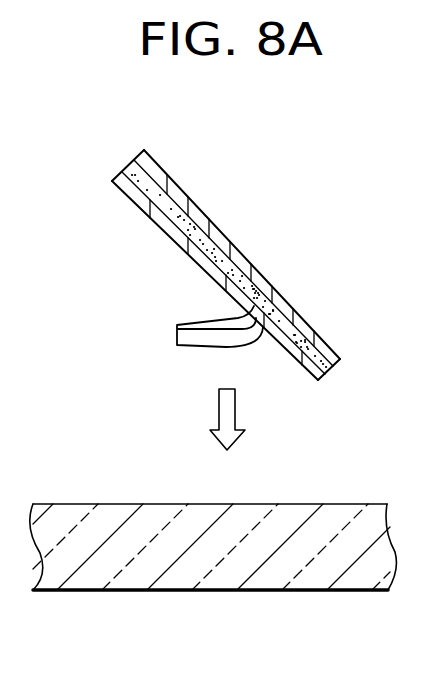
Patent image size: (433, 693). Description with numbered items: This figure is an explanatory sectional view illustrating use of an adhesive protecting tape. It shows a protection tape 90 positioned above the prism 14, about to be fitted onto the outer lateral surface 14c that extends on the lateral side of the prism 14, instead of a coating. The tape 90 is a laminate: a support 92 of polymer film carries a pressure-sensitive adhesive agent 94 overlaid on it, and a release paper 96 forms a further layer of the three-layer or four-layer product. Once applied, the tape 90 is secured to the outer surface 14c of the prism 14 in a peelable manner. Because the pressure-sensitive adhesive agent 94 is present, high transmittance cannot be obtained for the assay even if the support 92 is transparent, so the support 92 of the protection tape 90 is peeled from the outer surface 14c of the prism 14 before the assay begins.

The protection tape 90 is at (288, 279).
The support 92 is at (222, 242).
The pressure-sensitive adhesive agent 94 is at (175, 203).
The release paper 96 is at (173, 237).
The prism 14 is at (208, 583).
The outer lateral surface 14c is at (127, 504).